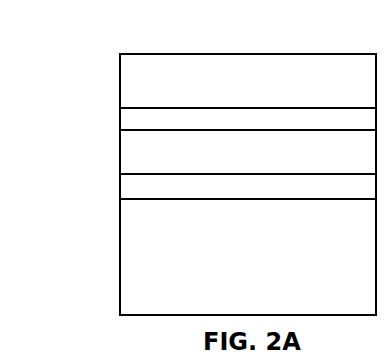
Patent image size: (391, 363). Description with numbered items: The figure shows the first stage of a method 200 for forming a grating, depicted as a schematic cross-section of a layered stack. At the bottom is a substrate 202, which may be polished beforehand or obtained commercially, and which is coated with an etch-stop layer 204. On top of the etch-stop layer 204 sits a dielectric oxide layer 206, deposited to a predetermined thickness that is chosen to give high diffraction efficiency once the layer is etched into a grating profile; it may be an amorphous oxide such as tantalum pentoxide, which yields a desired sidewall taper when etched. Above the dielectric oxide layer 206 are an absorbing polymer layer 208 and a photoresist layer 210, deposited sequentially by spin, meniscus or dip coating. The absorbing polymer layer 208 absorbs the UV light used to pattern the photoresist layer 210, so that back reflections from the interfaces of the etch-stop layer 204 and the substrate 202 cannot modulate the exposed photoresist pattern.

The method 200 is at (86, 32).
The substrate 202 is at (261, 264).
The etch-stop layer 204 is at (261, 196).
The dielectric oxide layer 206 is at (261, 160).
The absorbing polymer layer 208 is at (261, 126).
The photoresist layer 210 is at (261, 90).